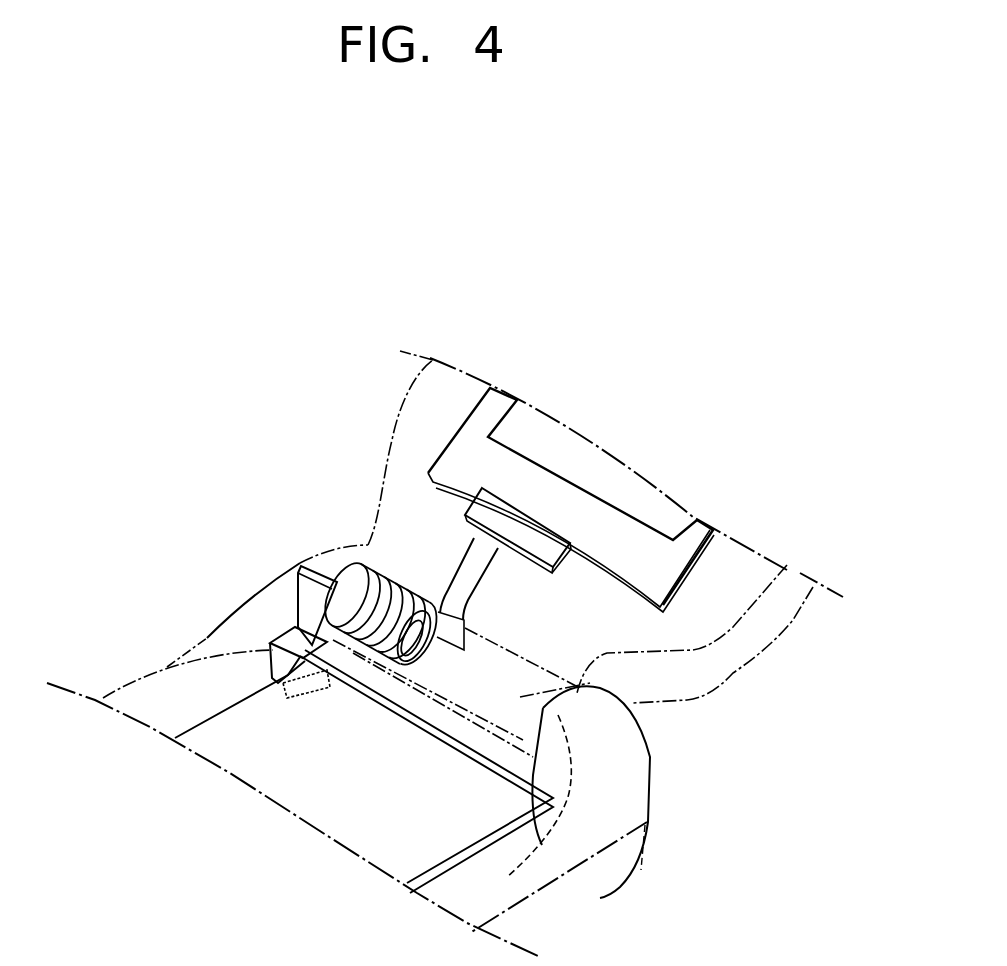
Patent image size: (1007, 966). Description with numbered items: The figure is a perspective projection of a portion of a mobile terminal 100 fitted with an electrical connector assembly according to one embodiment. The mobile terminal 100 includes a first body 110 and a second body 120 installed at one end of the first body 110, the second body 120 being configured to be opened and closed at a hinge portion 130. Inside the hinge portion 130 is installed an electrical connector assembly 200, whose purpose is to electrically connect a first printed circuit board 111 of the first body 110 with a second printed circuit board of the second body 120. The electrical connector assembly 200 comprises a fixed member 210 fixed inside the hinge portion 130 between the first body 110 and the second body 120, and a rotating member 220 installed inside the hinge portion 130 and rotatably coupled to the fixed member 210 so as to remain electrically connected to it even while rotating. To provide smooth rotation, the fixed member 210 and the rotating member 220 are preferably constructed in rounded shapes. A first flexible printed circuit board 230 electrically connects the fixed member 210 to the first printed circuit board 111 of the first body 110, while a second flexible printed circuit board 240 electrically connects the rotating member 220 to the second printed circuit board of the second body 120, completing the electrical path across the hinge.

The mobile terminal 100 is at (622, 442).
The first body 110 is at (590, 888).
The first printed circuit board 111 is at (390, 847).
The second body 120 is at (770, 627).
The hinge portion 130 is at (647, 753).
The electrical connector assembly 200 is at (330, 553).
The fixed member 210 is at (355, 594).
The rotating member 220 is at (358, 624).
The first flexible printed circuit board 230 is at (303, 565).
The second flexible printed circuit board 240 is at (473, 567).